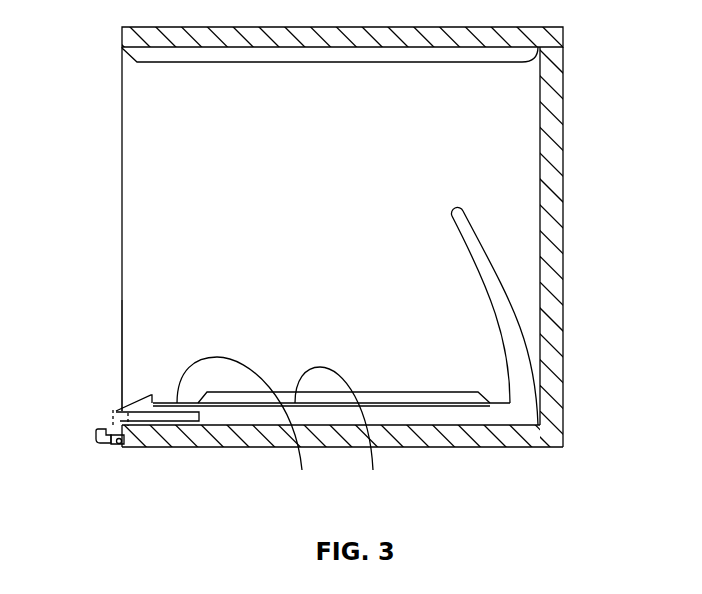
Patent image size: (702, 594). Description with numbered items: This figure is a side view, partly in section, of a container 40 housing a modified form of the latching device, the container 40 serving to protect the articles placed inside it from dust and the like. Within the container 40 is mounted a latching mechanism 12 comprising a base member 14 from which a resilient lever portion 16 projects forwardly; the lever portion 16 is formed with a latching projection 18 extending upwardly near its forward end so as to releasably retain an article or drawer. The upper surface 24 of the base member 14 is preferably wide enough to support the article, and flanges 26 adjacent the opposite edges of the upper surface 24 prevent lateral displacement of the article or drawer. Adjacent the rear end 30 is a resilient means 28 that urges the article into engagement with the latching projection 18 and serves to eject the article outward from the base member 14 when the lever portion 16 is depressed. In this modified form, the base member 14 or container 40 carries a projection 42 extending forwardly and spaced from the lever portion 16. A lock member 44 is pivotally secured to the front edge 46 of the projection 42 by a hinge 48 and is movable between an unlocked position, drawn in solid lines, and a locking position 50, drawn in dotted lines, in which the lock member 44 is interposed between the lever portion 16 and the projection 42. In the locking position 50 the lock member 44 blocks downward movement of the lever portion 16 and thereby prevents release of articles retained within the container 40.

The container 40 is at (120, 62).
The rear end 30 is at (538, 448).
The base member 14 is at (462, 448).
The resilient means 28 is at (477, 232).
The lever portion 16 is at (183, 414).
The latching mechanism 12 is at (133, 400).
The projection 42 is at (170, 409).
The latching projection 18 is at (152, 404).
The locking position 50 is at (111, 420).
The lock member 44 is at (95, 437).
The front edge 46 is at (114, 447).
The hinge 48 is at (124, 441).
The upper surface 24 is at (245, 427).
The flanges 26 is at (341, 432).